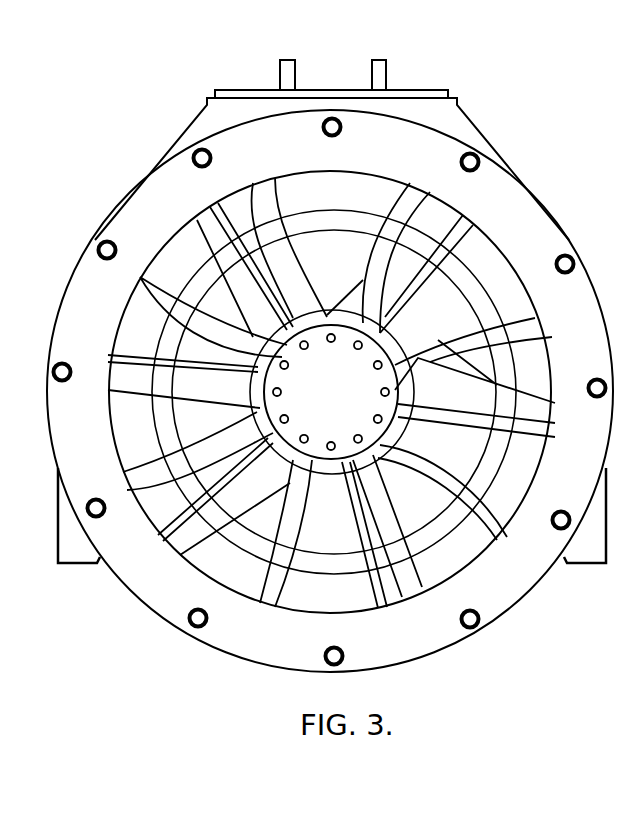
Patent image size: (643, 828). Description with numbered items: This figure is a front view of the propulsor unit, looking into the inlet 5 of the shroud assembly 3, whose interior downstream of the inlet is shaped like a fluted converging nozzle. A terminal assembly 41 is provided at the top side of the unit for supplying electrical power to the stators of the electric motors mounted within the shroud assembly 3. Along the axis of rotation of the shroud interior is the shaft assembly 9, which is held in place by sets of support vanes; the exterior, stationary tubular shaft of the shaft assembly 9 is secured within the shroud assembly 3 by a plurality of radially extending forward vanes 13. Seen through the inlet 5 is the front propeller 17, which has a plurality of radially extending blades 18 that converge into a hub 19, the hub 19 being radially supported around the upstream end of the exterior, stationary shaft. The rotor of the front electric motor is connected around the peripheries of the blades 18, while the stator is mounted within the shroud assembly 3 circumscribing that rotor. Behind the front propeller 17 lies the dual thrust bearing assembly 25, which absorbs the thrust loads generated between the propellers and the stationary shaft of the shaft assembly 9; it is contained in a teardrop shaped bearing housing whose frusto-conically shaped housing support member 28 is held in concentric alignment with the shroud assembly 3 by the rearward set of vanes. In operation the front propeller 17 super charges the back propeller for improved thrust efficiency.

The shroud assembly 3 is at (524, 236).
The terminal assembly 41 is at (252, 90).
The inlet 5 is at (178, 272).
The shaft assembly 9 is at (341, 410).
The forward vanes 13 is at (380, 490).
The front propeller 17 is at (214, 444).
The blades 18 is at (298, 513).
The hub 19 is at (398, 357).
The dual thrust bearing assembly 25 is at (427, 438).
The housing support member 28 is at (193, 413).